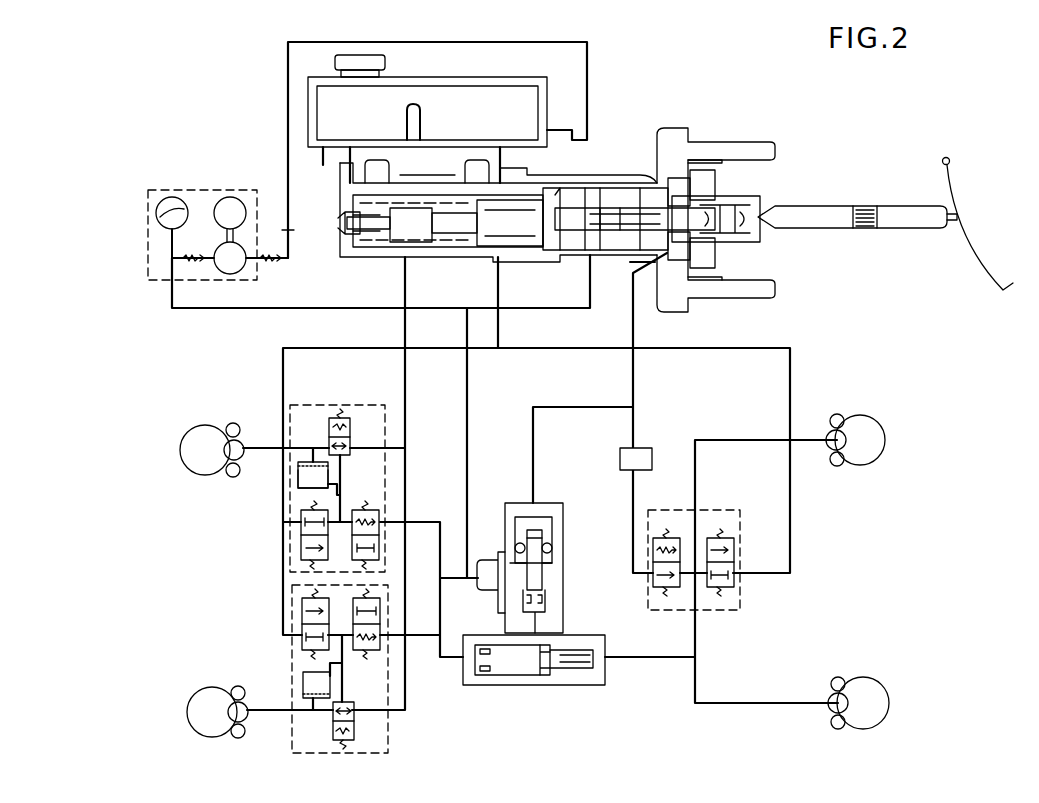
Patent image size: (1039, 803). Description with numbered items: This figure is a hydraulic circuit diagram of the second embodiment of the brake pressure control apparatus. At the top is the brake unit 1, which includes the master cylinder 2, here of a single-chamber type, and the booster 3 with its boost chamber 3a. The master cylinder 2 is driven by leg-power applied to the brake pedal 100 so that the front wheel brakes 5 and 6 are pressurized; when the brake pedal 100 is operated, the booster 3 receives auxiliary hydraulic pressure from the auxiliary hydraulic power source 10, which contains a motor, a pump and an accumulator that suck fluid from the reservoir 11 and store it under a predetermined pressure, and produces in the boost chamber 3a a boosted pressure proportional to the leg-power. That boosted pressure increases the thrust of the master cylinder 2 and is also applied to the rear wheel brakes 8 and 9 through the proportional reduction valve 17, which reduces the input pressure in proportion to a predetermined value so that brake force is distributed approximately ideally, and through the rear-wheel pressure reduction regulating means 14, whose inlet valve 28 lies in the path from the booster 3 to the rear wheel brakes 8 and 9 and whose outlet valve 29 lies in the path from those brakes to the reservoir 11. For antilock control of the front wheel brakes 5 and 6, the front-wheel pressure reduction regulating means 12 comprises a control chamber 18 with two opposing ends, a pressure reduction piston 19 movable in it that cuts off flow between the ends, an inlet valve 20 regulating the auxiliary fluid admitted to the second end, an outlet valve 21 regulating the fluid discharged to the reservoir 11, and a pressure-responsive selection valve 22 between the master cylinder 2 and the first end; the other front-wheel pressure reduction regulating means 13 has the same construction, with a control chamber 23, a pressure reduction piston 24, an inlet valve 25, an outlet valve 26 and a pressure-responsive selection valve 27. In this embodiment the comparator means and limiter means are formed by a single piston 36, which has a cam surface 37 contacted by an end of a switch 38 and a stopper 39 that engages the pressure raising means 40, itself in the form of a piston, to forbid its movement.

The brake unit 1 is at (556, 191).
The master cylinder 2 is at (455, 251).
The booster 3 is at (607, 166).
The boost chamber 3a is at (655, 300).
The front wheel brake 5 is at (240, 448).
The front wheel brake 6 is at (242, 710).
The rear wheel brake 8 is at (832, 432).
The rear wheel brake 9 is at (834, 698).
The auxiliary hydraulic power source 10 is at (185, 190).
The reservoir 11 is at (494, 84).
The front-wheel pressure reduction regulating means 12 is at (305, 405).
The front-wheel pressure reduction regulating means 13 is at (275, 587).
The rear-wheel pressure reduction regulating means 14 is at (715, 510).
The proportional reduction valve 17 is at (645, 450).
The control chamber 18 is at (300, 485).
The pressure reduction piston 19 is at (300, 475).
The inlet valve 20 is at (376, 510).
The outlet valve 21 is at (301, 518).
The pressure-responsive selection valve 22 is at (346, 420).
The control chamber 23 is at (308, 672).
The pressure reduction piston 24 is at (305, 690).
The inlet valve 25 is at (373, 598).
The outlet valve 26 is at (302, 606).
The pressure-responsive selection valve 27 is at (354, 722).
The inlet valve 28 is at (653, 545).
The outlet valve 29 is at (734, 543).
The piston 36 is at (541, 560).
The cam surface 37 is at (546, 578).
The switch 38 is at (508, 562).
The stopper 39 is at (534, 667).
The pressure raising means 40 is at (511, 665).
The brake pedal 100 is at (980, 252).